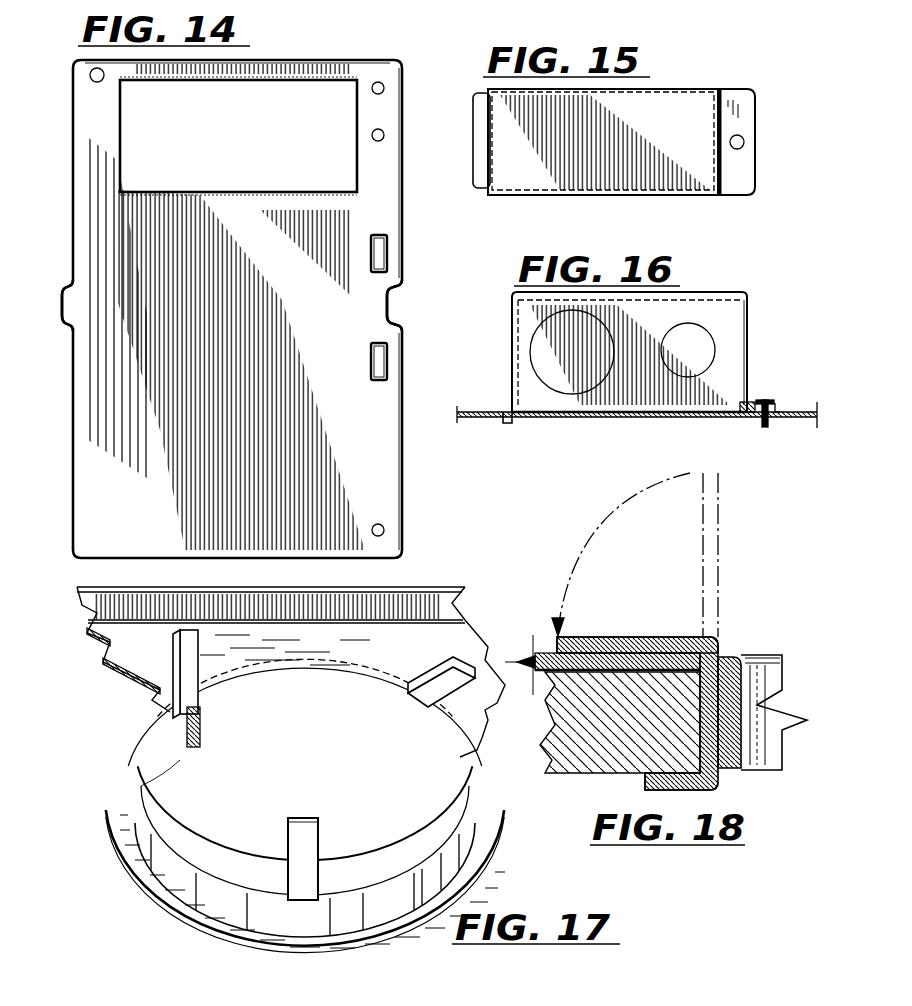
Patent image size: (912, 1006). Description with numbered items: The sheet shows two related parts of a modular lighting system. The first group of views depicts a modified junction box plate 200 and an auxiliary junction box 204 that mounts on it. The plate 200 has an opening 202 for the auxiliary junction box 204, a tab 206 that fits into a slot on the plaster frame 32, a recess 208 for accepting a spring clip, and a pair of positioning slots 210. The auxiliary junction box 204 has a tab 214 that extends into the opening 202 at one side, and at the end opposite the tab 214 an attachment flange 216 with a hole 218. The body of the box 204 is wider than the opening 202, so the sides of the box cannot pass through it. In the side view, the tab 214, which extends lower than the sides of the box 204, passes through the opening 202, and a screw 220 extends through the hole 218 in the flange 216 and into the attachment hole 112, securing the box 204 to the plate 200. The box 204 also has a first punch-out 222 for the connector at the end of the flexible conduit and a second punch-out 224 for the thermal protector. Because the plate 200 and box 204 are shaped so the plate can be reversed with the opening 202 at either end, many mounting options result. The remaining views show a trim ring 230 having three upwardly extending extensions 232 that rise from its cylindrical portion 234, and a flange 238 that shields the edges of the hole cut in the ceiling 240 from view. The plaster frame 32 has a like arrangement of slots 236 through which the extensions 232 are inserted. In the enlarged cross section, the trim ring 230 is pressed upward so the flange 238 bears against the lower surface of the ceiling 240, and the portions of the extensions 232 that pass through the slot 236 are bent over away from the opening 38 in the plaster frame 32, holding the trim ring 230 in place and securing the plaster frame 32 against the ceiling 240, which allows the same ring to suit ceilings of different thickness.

In FIG. 17, the plaster frame 32 is at (115, 672).
In FIG. 17, the opening in the plaster frame 38 is at (350, 770).
In FIG. 14, the attachment hole 112 is at (385, 135).
In FIG. 14, the junction box plate 200 is at (78, 432).
In FIG. 16, the junction box plate 200 is at (477, 417).
In FIG. 14, the opening 202 is at (145, 128).
In FIG. 16, the opening 202 is at (645, 417).
In FIG. 15, the auxiliary junction box 204 is at (690, 93).
In FIG. 16, the auxiliary junction box 204 is at (747, 315).
In FIG. 14, the tab 206 is at (62, 292).
In FIG. 14, the recess 208 is at (393, 305).
In FIG. 14, the positioning slots 210 is at (381, 258).
In FIG. 15, the tab 214 is at (473, 148).
In FIG. 16, the tab 214 is at (510, 422).
In FIG. 15, the attachment flange 216 is at (748, 170).
In FIG. 16, the attachment flange 216 is at (777, 397).
In FIG. 15, the hole 218 is at (744, 142).
In FIG. 16, the screw 220 is at (763, 400).
In FIG. 16, the first punch-out 222 is at (695, 342).
In FIG. 16, the second punch-out 224 is at (540, 355).
In FIG. 17, the trim ring 230 is at (103, 803).
In FIG. 18, the trim ring 230 is at (717, 788).
In FIG. 17, the extensions 232 is at (155, 693).
In FIG. 18, the extensions 232 is at (610, 633).
In FIG. 17, the cylindrical portion 234 is at (202, 870).
In FIG. 17, the slots 236 is at (200, 713).
In FIG. 18, the slots 236 is at (727, 647).
In FIG. 17, the flange 238 is at (483, 858).
In FIG. 18, the flange 238 is at (647, 785).
In FIG. 18, the ceiling 240 is at (585, 753).